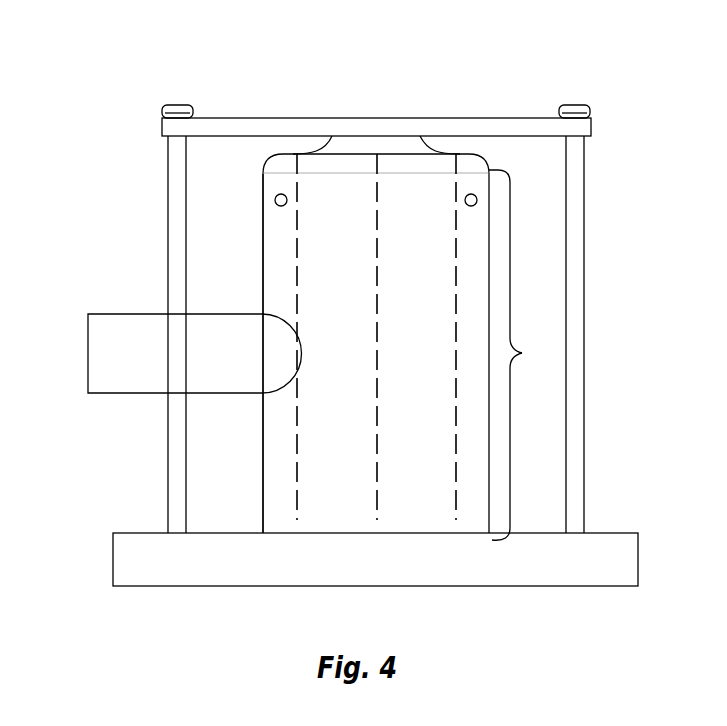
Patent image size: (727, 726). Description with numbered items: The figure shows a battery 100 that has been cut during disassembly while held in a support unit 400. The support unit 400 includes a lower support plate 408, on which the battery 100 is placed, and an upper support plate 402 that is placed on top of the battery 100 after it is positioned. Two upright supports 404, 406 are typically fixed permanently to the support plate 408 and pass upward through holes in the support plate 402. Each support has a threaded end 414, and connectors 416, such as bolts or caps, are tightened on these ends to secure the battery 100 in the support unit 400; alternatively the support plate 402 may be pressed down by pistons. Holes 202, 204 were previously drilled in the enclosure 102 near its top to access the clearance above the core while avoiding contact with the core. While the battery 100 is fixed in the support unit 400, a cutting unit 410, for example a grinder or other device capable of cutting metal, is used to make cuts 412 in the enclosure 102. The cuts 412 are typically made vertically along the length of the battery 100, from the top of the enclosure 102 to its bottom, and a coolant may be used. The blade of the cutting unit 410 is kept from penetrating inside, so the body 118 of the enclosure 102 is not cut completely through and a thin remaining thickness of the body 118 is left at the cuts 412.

The support unit 400 is at (551, 90).
The support plate 402 is at (373, 118).
The connectors 416 is at (182, 104).
The threaded end 414 is at (168, 178).
The support 406 is at (176, 250).
The support 404 is at (585, 248).
The support plate 408 is at (604, 573).
The cutting unit 410 is at (100, 362).
The battery 100 is at (527, 324).
The body 118 is at (263, 488).
The hole 202 is at (276, 192).
The hole 204 is at (470, 194).
The enclosure 102 is at (523, 353).
The cuts 412 is at (456, 342).